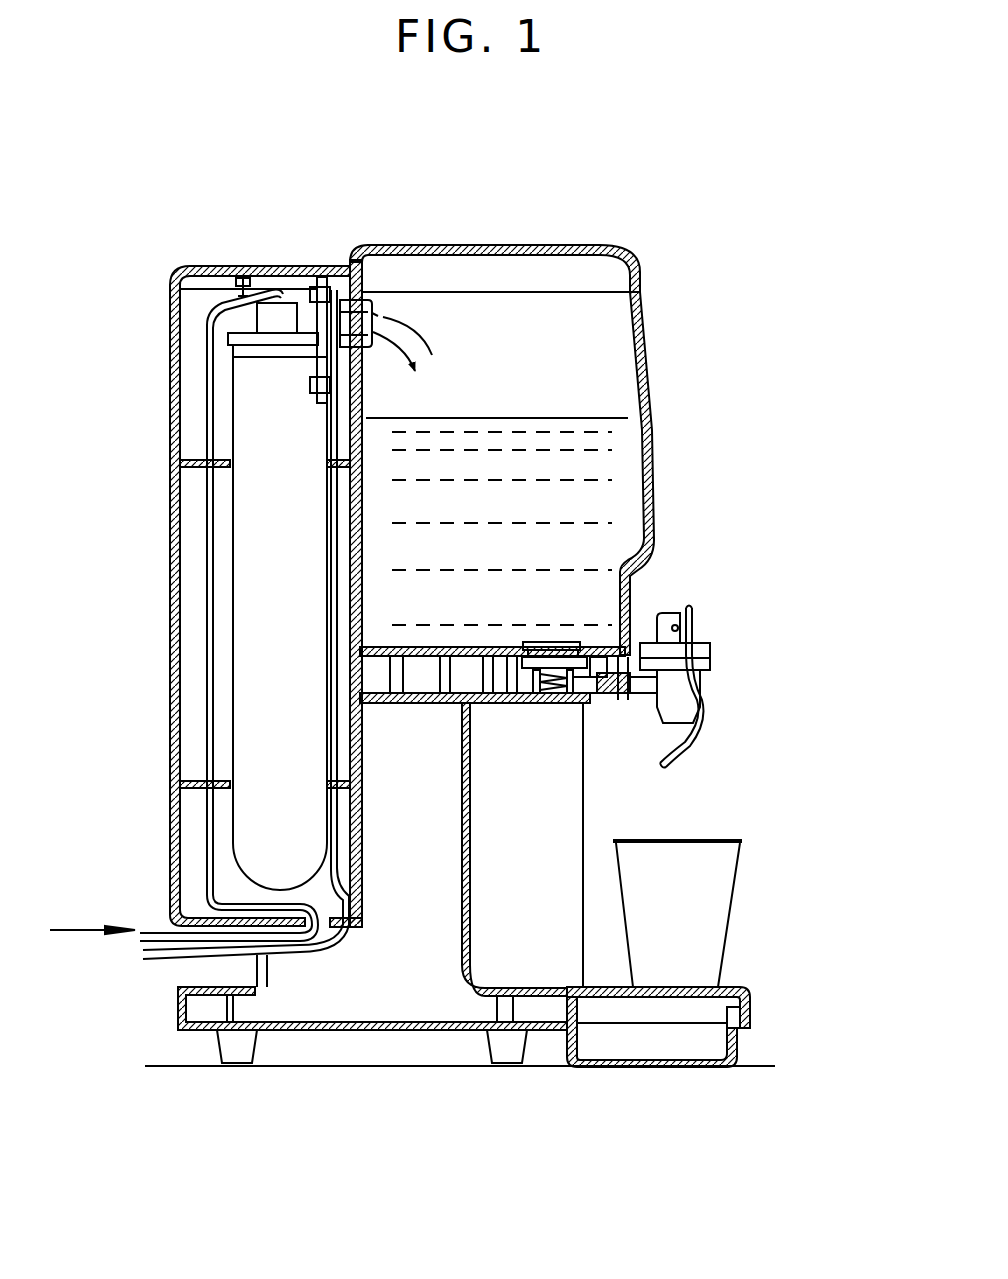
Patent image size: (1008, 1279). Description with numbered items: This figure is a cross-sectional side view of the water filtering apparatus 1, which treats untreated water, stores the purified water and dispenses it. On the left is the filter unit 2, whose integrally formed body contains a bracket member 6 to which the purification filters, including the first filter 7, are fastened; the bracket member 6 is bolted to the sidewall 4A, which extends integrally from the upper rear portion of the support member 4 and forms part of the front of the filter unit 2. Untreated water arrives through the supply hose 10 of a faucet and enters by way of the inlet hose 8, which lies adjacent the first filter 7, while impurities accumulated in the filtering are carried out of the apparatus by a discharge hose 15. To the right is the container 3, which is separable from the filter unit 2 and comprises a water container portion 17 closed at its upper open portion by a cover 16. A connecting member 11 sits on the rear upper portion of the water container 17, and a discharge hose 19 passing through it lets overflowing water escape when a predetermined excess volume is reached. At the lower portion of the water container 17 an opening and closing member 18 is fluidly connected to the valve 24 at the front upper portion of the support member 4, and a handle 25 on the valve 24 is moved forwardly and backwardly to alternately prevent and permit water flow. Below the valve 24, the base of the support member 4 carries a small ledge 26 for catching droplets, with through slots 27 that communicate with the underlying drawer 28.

The water filtering apparatus 1 is at (630, 230).
The filter unit 2 is at (162, 484).
The container 3 is at (654, 381).
The support member 4 is at (322, 1046).
The sidewall 4A is at (350, 432).
The bracket member 6 is at (327, 282).
The first filter 7 is at (250, 687).
The inlet hose 8 is at (297, 268).
The supply hose 10 is at (162, 927).
The connecting member 11 is at (380, 308).
The discharge hose 15 is at (140, 943).
The cover 16 is at (535, 247).
The water container portion 17 is at (618, 405).
The opening and closing member 18 is at (582, 629).
The discharge hose 19 is at (163, 960).
The valve 24 is at (725, 635).
The handle 25 is at (707, 712).
The ledge 26 is at (758, 1001).
The through slots 27 is at (729, 990).
The drawer 28 is at (730, 1047).